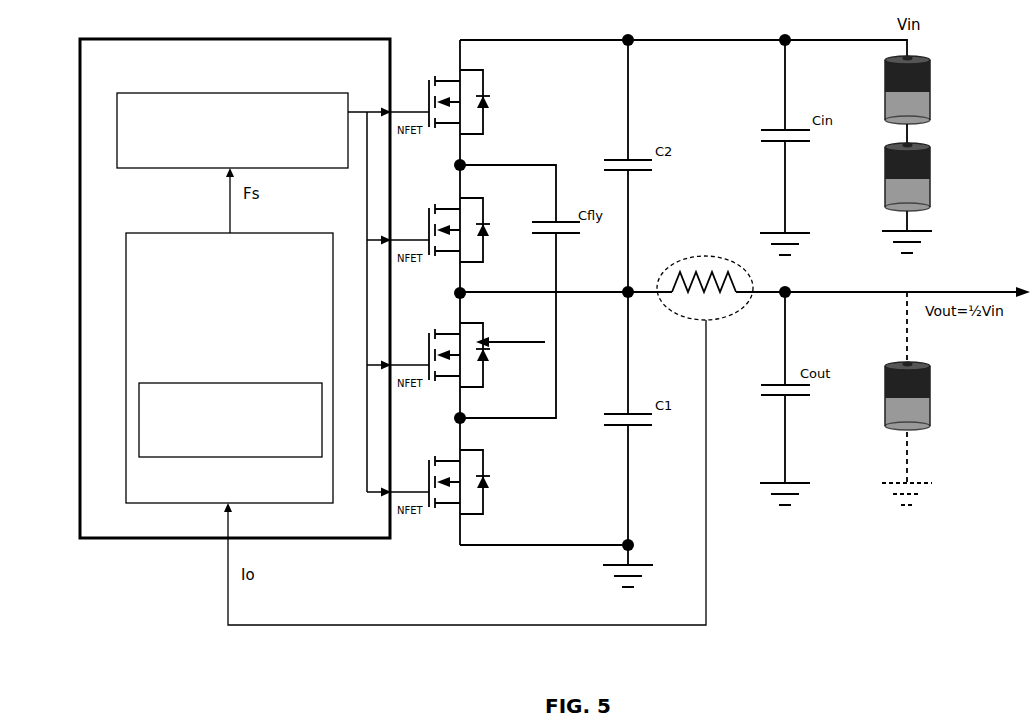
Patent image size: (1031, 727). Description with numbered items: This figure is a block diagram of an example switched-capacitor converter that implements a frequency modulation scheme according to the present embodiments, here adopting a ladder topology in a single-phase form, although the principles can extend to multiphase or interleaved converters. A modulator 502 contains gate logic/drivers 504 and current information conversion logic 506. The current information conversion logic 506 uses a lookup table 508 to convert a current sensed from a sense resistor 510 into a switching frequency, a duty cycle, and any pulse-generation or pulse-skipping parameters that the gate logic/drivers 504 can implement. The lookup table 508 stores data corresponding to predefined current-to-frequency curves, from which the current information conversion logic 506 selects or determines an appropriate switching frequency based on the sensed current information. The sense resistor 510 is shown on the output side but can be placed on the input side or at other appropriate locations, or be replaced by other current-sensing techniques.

The modulator 502 is at (235, 288).
The gate logic/drivers 504 is at (232, 130).
The current information conversion logic 506 is at (229, 368).
The lookup table 508 is at (230, 420).
The sense resistor 510 is at (703, 257).